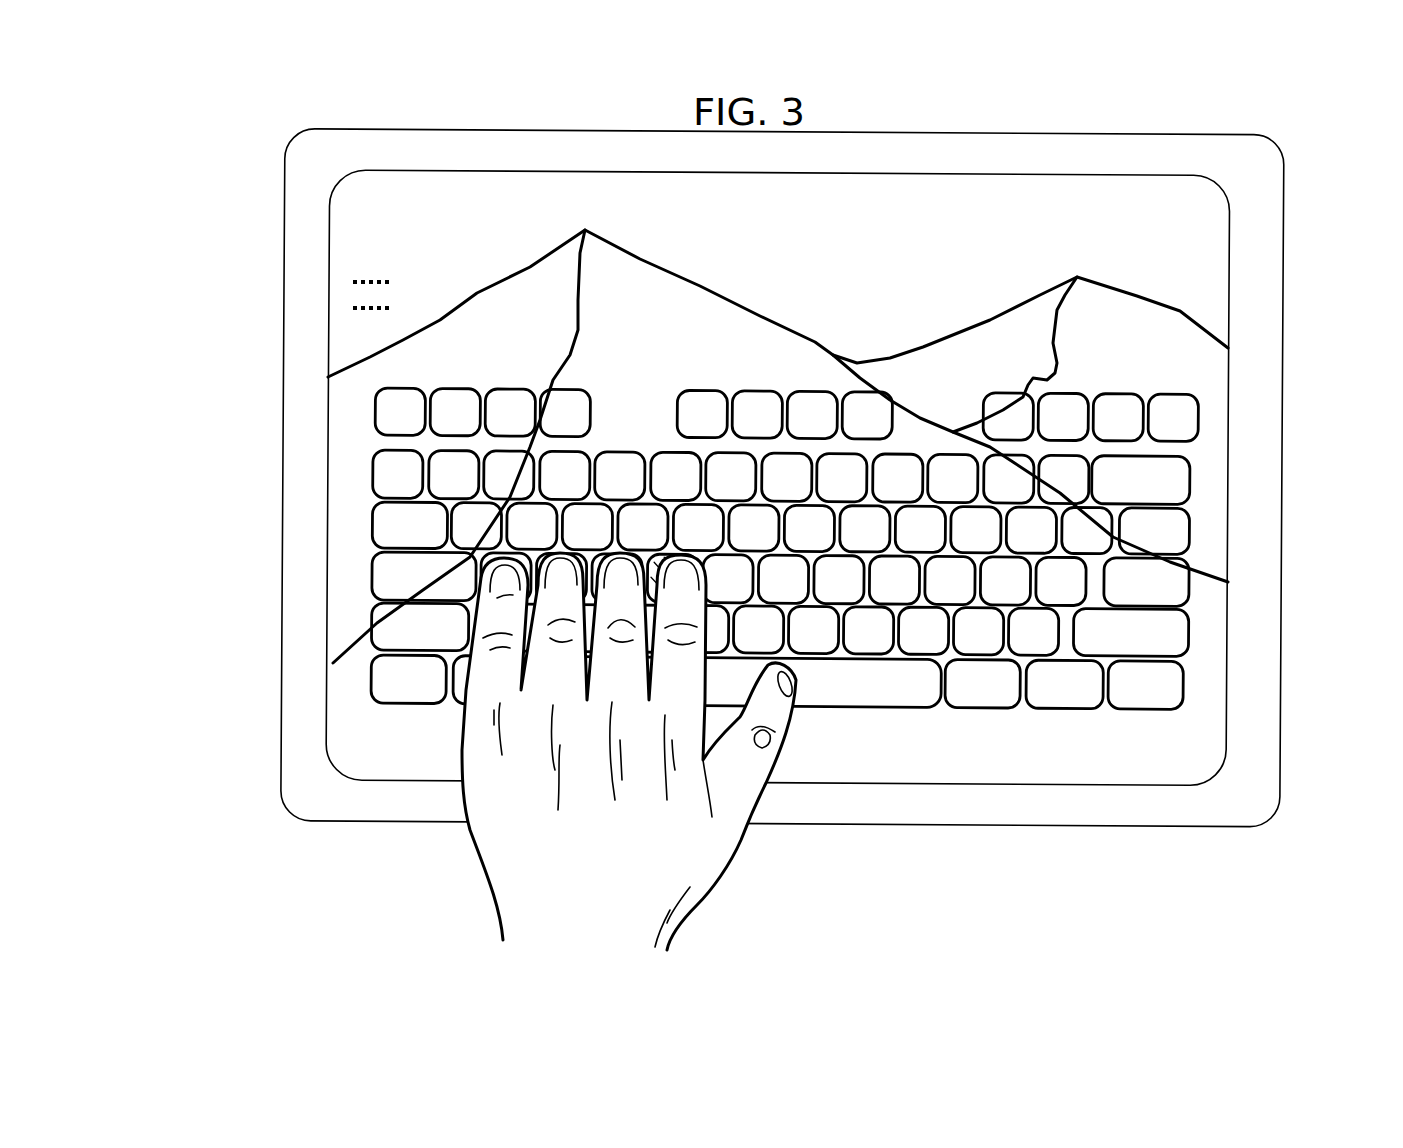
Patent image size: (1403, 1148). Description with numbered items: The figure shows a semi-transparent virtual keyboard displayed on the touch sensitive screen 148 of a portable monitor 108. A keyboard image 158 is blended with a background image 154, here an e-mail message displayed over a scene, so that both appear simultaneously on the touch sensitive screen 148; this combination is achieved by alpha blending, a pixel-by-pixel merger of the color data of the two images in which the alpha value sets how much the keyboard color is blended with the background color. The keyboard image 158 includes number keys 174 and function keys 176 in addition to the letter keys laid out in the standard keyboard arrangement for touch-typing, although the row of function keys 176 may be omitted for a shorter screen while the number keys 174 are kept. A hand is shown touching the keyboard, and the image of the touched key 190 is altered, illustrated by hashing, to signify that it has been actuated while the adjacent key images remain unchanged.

The portable monitor 108 is at (973, 829).
The touch sensitive screen 148 is at (778, 440).
The background image 154 is at (533, 180).
The keyboard image 158 is at (786, 507).
The number keys 174 is at (670, 450).
The function keys 176 is at (507, 388).
The key 190 is at (655, 563).